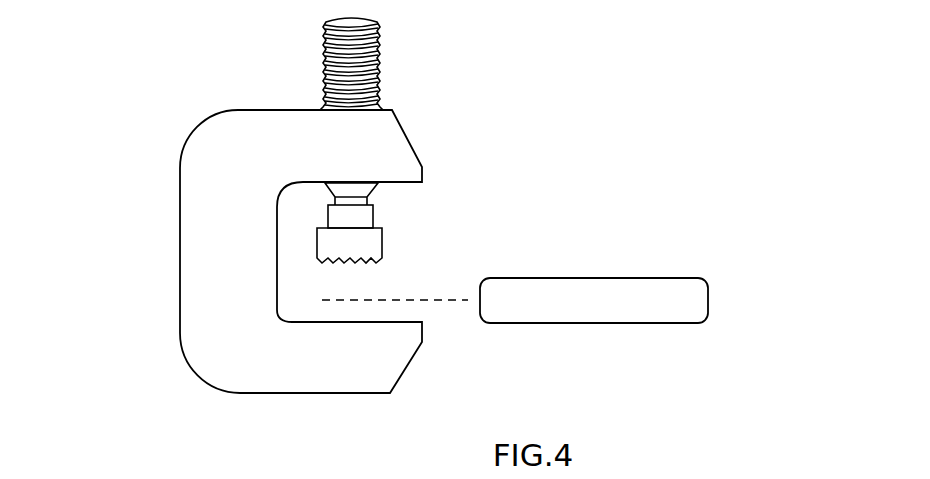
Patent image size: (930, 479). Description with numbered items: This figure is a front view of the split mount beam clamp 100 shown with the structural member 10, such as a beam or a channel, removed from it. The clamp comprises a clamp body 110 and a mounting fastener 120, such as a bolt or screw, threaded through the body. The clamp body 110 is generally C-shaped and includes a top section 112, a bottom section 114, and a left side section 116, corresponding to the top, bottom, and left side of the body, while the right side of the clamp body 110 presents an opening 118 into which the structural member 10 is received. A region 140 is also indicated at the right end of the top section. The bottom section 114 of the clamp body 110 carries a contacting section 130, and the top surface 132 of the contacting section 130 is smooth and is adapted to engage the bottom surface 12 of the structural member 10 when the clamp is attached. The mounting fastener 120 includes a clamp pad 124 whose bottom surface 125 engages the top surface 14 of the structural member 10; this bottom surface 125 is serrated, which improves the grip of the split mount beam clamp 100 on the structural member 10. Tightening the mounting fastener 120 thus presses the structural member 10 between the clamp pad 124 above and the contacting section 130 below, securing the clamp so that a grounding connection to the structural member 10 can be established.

The split mount beam clamp 100 is at (170, 103).
The clamp body 110 is at (182, 163).
The top section 112 is at (287, 130).
The bottom section 114 is at (287, 367).
The left side section 116 is at (223, 298).
The opening 118 is at (538, 231).
The mounting fastener 120 is at (378, 52).
The clamp pad 124 is at (375, 238).
The bottom surface of the clamp pad 125 is at (355, 263).
The contacting section 130 is at (343, 373).
The top surface of the contacting section 132 is at (405, 322).
The upper arm end 140 is at (397, 145).
The structural member 10 is at (692, 295).
The bottom surface of the structural member 12 is at (627, 323).
The top surface of the structural member 14 is at (640, 278).